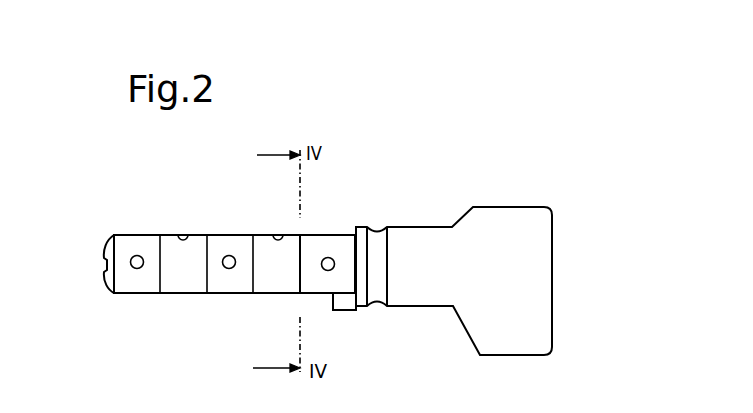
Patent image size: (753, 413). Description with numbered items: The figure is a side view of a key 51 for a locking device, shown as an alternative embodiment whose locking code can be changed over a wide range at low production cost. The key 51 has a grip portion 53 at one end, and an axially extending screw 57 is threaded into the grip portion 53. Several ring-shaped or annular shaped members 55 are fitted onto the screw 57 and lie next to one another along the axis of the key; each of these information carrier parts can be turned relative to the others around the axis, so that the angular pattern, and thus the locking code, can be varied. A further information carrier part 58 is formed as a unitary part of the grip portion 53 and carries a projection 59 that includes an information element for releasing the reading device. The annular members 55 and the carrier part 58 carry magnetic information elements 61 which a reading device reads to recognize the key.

The key 51 is at (487, 198).
The grip portion 53 is at (537, 265).
The annular shaped members 55 is at (152, 277).
The screw 57 is at (103, 272).
The information carrier part 58 is at (333, 243).
The projection 59 is at (350, 312).
The magnetic information elements 61 is at (182, 231).